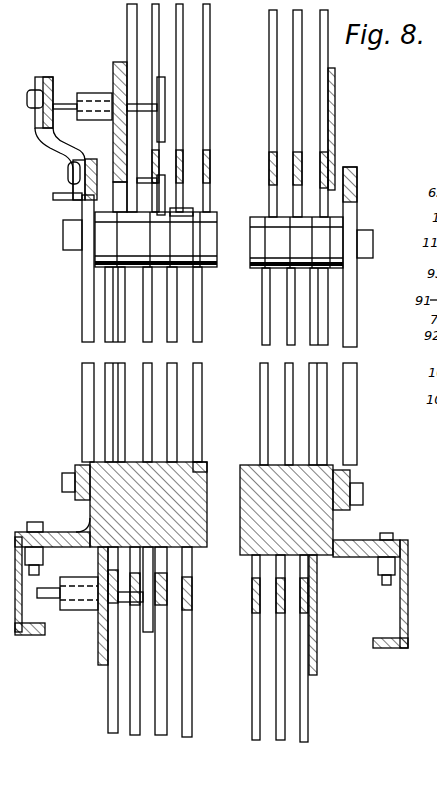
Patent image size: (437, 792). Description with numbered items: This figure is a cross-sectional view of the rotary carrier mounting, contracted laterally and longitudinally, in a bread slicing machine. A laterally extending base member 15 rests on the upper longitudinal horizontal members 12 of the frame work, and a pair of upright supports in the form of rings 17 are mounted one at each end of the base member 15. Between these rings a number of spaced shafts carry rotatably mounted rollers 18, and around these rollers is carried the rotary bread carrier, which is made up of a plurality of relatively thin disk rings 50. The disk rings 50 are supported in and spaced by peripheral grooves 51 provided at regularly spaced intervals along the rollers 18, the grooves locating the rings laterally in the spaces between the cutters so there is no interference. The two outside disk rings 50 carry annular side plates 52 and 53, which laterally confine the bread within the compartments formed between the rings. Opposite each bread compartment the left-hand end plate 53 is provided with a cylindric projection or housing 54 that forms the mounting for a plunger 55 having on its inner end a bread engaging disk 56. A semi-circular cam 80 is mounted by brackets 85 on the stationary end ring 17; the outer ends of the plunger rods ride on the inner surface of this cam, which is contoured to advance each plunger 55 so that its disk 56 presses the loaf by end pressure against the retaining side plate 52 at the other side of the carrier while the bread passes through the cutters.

The longitudinal horizontal member 12 is at (25, 636).
The base member 15 is at (80, 527).
The ring 17 is at (80, 373).
The roller 18 is at (250, 246).
The disk ring 50 is at (295, 50).
The peripheral groove 51 is at (185, 212).
The side plate 52 is at (336, 100).
The end plate 53 is at (120, 62).
The cylindric projection 54 is at (92, 93).
The plunger 55 is at (62, 104).
The bread engaging disk 56 is at (165, 98).
The semi-circular cam 80 is at (47, 77).
The bracket 85 is at (62, 145).